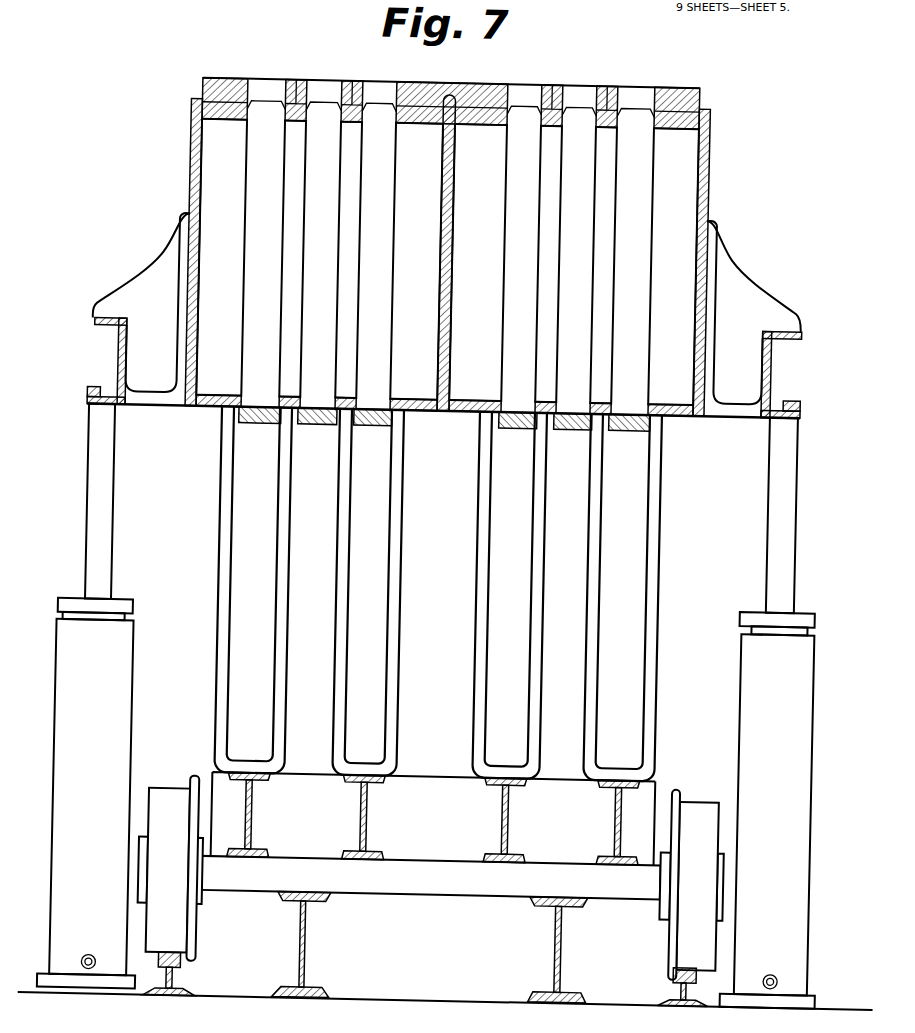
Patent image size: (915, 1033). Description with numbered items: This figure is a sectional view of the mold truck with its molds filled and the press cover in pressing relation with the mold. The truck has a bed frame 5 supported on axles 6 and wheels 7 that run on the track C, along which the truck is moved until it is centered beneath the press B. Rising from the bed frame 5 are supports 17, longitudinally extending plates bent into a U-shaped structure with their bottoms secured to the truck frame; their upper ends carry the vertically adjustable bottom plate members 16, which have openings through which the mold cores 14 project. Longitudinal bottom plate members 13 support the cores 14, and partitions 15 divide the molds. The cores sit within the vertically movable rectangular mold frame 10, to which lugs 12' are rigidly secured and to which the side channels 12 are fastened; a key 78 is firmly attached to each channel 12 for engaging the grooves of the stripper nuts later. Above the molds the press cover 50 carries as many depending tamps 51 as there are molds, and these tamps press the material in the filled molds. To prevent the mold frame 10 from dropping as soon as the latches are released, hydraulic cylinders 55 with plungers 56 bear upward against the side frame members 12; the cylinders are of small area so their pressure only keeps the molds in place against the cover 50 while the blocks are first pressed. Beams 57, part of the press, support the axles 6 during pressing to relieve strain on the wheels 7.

The press cover 50 is at (229, 83).
The tamps 51 is at (195, 112).
The press B is at (671, 83).
The mold frame 10 is at (185, 187).
The lugs 12' is at (449, 307).
The side channels 12 is at (442, 368).
The key 78 is at (94, 394).
The mold cores 14 is at (447, 262).
The partitions 15 is at (449, 353).
The vertically adjustable bottom plate members 16 is at (217, 412).
The longitudinal bottom plate members 13 is at (253, 428).
The supports 17 is at (284, 702).
The plungers 56 is at (111, 547).
The hydraulic cylinders 55 is at (430, 803).
The wheels 7 is at (180, 808).
The track C is at (192, 966).
The bed frame 5 is at (367, 833).
The axles 6 is at (430, 886).
The beams 57 is at (318, 968).